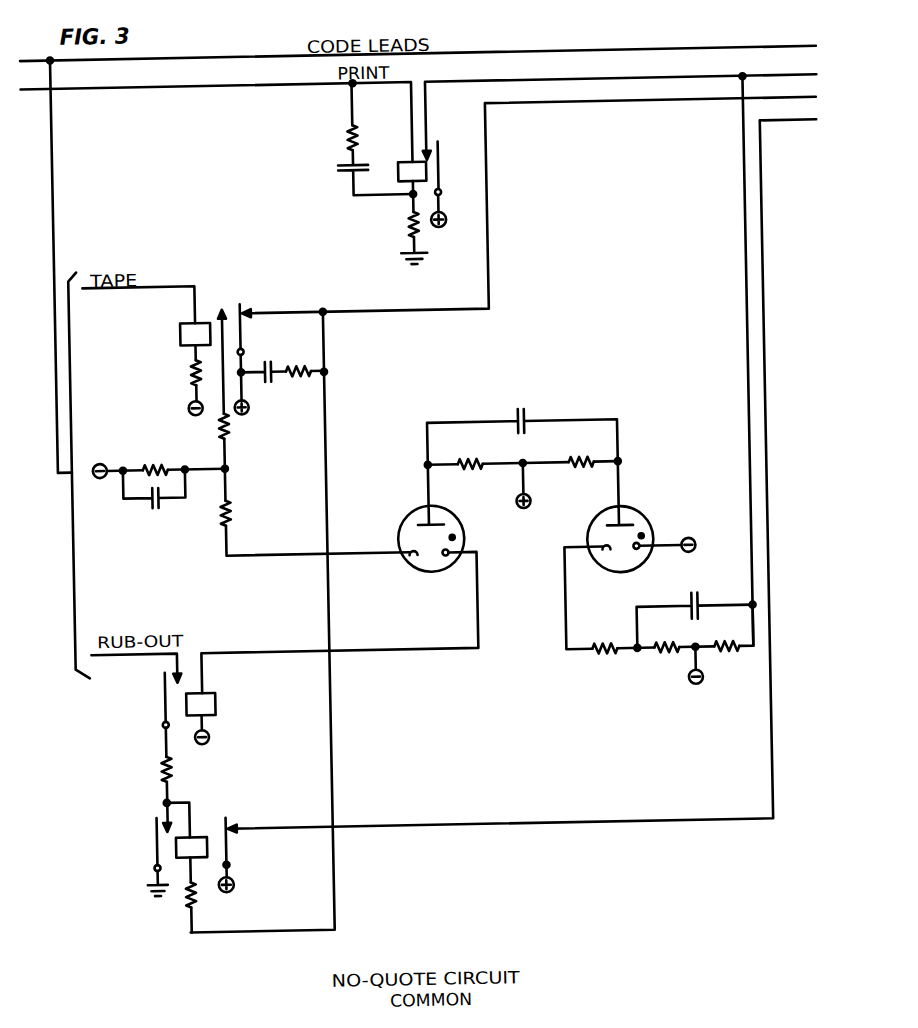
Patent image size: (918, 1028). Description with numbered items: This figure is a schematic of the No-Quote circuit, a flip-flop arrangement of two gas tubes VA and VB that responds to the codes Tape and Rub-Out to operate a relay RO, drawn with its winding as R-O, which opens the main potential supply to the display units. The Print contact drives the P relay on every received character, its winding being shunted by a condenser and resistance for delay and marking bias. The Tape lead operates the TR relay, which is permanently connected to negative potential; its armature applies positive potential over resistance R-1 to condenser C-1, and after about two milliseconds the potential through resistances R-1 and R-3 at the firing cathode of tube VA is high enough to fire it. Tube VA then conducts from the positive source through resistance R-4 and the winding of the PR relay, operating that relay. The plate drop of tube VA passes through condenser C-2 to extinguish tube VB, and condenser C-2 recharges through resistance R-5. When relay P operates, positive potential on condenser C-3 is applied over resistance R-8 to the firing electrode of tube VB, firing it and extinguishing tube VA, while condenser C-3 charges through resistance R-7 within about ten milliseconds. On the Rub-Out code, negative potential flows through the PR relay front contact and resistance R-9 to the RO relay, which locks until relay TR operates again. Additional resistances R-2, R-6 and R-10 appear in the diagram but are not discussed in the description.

The resistance R-1 is at (244, 431).
The resistor R-2 is at (158, 456).
The resistance R-3 is at (246, 517).
The resistance R-4 is at (475, 450).
The resistance R-5 is at (570, 449).
The resistor R-6 is at (734, 640).
The resistance R-7 is at (684, 658).
The resistance R-8 is at (622, 661).
The resistance R-9 is at (148, 770).
The resistor R-10 is at (176, 901).
The condenser C-1 is at (154, 501).
The condenser C-2 is at (522, 422).
The condenser C-3 is at (694, 610).
The tube VA is at (420, 518).
The tube VB is at (632, 516).
The P relay P is at (412, 172).
The TR relay TR is at (195, 334).
The PR relay PR is at (200, 704).
The RO relay R-O is at (191, 847).
The RO relay RO is at (522, 467).